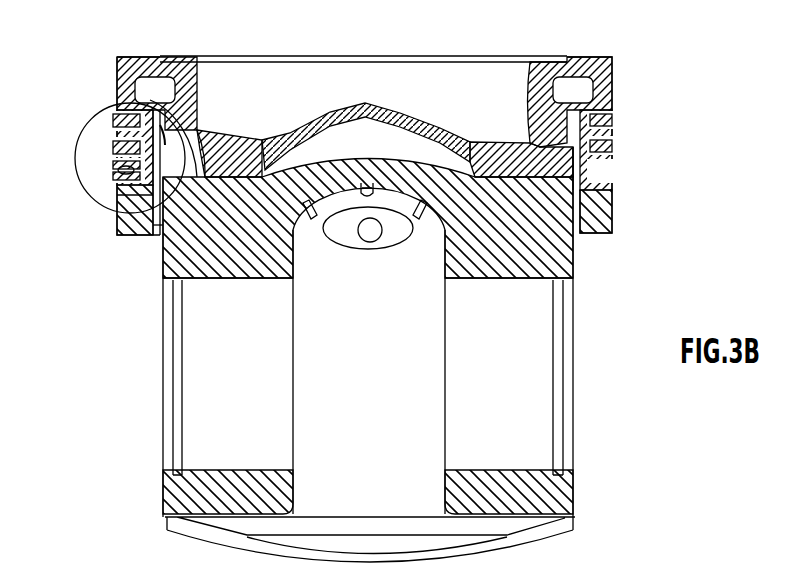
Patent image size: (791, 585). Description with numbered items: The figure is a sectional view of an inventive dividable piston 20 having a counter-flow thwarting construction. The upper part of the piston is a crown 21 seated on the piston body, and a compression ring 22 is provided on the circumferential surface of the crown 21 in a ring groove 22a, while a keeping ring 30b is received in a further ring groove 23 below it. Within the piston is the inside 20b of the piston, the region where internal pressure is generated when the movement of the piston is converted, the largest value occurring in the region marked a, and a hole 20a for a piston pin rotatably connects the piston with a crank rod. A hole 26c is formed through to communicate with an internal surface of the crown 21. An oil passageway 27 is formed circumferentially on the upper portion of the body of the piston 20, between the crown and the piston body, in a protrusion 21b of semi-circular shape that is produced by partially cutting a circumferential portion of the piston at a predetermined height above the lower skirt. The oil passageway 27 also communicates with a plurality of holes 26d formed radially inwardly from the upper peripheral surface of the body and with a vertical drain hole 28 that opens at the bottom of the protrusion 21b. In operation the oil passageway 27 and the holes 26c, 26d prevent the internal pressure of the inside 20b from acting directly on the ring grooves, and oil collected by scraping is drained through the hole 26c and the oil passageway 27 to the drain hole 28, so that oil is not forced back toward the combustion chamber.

The piston 20 is at (253, 385).
The hole for a piston pin 20a is at (540, 428).
The inside of the piston 20b is at (385, 282).
The crown 21 is at (395, 108).
The protrusion of a semi-circular shape 21b is at (612, 213).
The compression ring 22 is at (612, 143).
The ring groove 22a is at (110, 107).
The ring groove 23 is at (115, 150).
The hole 26c is at (160, 128).
The holes 26d is at (140, 196).
The oil passageway 27 is at (117, 220).
The drain hole 28 is at (153, 233).
The keeping ring 30b is at (115, 176).